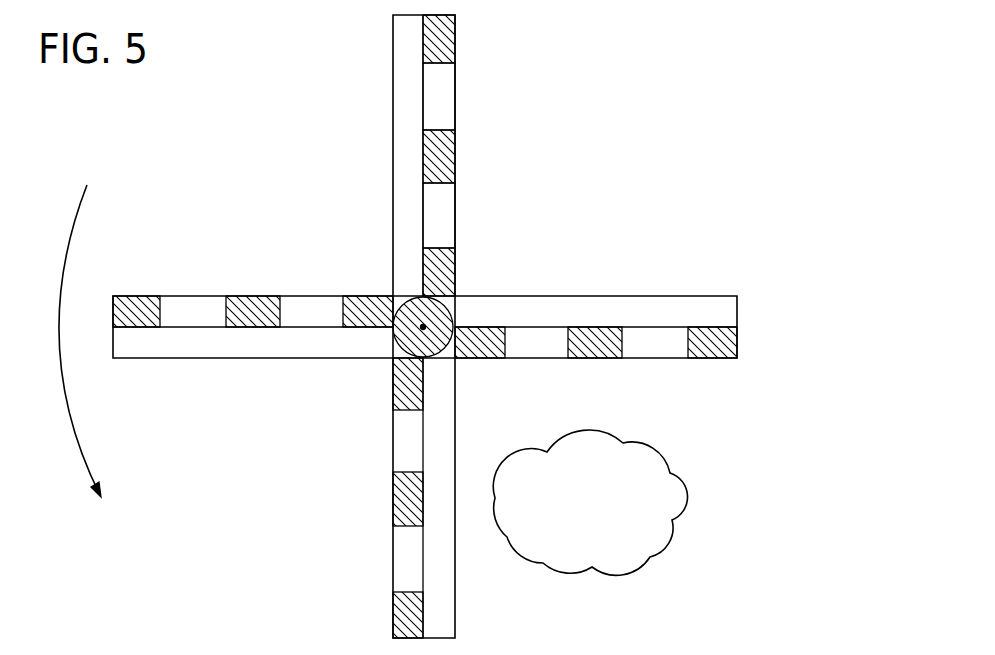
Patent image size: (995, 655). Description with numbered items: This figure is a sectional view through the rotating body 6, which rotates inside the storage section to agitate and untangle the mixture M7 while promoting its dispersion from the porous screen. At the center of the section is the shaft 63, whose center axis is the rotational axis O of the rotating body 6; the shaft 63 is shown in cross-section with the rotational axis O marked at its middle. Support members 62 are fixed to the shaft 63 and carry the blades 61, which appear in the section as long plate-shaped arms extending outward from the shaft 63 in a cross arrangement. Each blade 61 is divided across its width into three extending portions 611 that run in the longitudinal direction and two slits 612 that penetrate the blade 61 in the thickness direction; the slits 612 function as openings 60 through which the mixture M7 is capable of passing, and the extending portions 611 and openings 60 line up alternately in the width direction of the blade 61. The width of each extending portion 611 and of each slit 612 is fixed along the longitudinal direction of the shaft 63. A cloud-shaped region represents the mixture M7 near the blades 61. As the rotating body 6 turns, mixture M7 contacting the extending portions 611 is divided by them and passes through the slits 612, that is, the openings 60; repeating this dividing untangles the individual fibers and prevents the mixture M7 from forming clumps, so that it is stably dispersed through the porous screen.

The rotating body 6 is at (442, 326).
The openings 60 is at (425, 326).
The blades 61 is at (255, 267).
The support members 62 is at (658, 308).
The shaft 63 is at (444, 325).
The extending portions 611 is at (245, 296).
The slits 612 is at (438, 205).
The rotational axis O is at (423, 328).
The mixture M7 is at (687, 497).